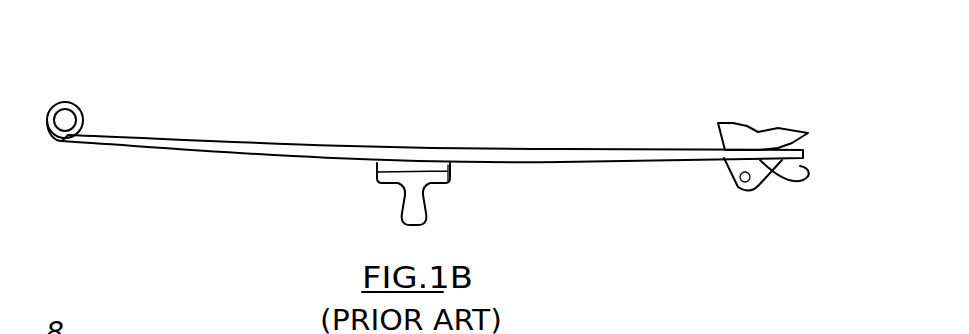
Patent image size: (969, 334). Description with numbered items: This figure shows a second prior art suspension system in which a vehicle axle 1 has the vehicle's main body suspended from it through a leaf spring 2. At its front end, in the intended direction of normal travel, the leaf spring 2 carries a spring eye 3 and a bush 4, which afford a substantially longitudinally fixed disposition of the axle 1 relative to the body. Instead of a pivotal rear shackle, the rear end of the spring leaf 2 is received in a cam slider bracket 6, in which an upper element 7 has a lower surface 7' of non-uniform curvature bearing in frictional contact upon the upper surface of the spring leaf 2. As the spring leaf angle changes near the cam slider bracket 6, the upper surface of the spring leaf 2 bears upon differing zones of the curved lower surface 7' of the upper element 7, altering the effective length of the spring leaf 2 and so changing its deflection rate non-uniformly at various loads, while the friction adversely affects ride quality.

The vehicle axle 1 is at (450, 170).
The leaf spring 2 is at (303, 150).
The spring eye 3 is at (66, 108).
The bush 4 is at (62, 125).
The cam slider bracket 6 is at (725, 173).
The upper element 7 is at (740, 108).
The lower surface 7' is at (812, 162).